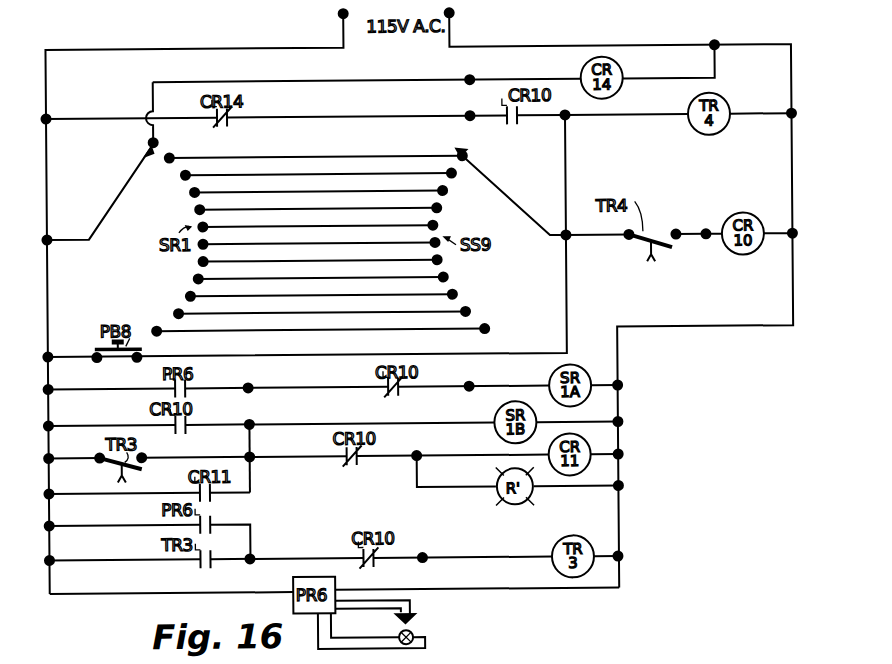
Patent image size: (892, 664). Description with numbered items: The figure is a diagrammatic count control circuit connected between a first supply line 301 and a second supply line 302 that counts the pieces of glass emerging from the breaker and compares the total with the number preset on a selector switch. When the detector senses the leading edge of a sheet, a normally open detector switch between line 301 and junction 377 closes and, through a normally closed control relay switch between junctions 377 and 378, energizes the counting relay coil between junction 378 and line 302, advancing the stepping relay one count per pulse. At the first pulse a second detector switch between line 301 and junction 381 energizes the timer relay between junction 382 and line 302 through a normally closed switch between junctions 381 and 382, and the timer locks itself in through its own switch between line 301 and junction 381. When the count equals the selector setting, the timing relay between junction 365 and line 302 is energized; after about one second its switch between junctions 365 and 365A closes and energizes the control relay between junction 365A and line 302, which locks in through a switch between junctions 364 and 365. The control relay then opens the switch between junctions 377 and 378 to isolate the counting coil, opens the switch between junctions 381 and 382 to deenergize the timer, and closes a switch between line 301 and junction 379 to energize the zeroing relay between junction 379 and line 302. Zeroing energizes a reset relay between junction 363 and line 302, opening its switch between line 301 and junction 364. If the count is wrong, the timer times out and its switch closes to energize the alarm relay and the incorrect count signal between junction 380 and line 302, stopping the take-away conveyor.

The power supply line conductor 301 is at (341, 28).
The power supply line conductor 302 is at (451, 30).
The circuit junction point 363 is at (476, 72).
The circuit junction point 364 is at (476, 107).
The circuit junction point 365 is at (564, 243).
The circuit junction point 365A is at (700, 224).
The circuit junction point 377 is at (256, 381).
The circuit junction point 378 is at (477, 381).
The circuit junction point 379 is at (257, 417).
The circuit junction point 380 is at (414, 457).
The circuit junction point 381 is at (250, 559).
The circuit junction point 382 is at (420, 558).